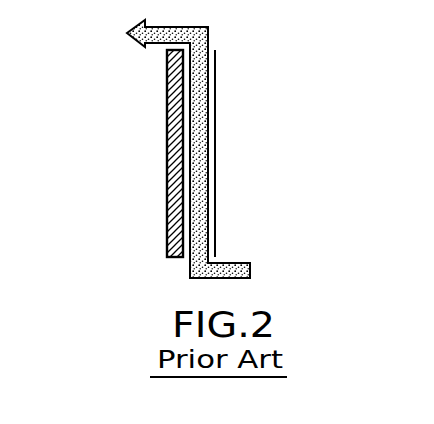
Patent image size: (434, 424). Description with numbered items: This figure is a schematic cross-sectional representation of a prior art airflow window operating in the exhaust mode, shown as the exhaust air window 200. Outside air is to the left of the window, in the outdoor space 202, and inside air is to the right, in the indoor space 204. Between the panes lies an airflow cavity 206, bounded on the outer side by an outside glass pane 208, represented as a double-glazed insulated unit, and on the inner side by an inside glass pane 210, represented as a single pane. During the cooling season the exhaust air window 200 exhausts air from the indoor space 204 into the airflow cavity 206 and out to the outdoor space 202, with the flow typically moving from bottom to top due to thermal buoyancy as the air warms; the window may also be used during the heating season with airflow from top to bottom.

The exhaust air window 200 is at (187, 149).
The outdoor space 202 is at (89, 150).
The indoor space 204 is at (291, 229).
The airflow cavity 206 is at (211, 123).
The outside glass pane 208 is at (167, 190).
The inside glass pane 210 is at (215, 65).